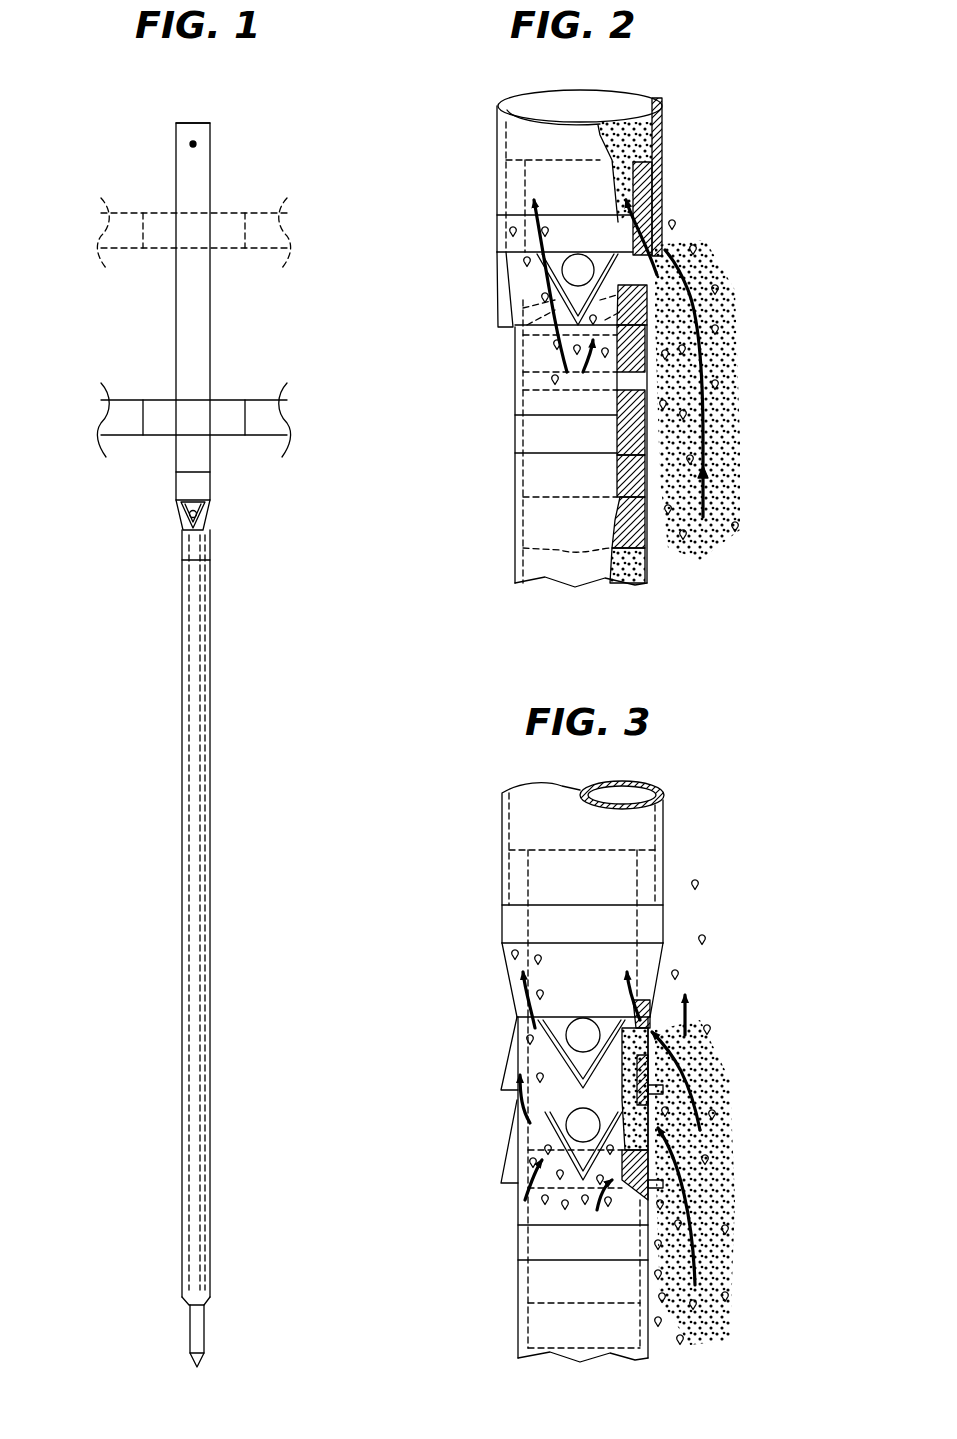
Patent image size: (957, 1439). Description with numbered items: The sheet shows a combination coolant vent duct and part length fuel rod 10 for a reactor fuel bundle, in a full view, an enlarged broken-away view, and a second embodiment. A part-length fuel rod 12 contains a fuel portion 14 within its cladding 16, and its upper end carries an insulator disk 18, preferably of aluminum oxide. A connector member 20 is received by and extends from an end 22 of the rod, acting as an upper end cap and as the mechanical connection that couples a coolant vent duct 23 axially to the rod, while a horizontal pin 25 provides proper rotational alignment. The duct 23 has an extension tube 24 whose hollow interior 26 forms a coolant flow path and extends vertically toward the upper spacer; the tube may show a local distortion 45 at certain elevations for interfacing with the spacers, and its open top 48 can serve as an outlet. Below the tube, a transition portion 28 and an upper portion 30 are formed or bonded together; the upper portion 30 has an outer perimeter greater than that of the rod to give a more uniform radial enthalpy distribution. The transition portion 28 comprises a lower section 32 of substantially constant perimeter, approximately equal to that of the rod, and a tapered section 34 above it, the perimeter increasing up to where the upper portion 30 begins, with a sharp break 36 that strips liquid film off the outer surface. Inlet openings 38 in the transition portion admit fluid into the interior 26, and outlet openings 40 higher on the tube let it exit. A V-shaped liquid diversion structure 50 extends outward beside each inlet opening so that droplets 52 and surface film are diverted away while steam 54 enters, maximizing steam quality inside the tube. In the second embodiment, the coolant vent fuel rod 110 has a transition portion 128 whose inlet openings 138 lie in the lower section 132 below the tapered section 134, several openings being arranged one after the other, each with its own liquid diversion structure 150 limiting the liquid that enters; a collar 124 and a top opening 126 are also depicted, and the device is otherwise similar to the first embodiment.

In FIG. 1, the combination coolant vent duct and part length fuel rod 10 is at (218, 683).
In FIG. 1, the part-length fuel rod 12 is at (210, 1087).
In FIG. 2, the part-length fuel rod 12 is at (652, 571).
In FIG. 3, the part-length fuel rod 12 is at (583, 1189).
In FIG. 2, the fuel portion 14 is at (628, 583).
In FIG. 2, the cladding 16 is at (617, 485).
In FIG. 2, the insulator disk 18 is at (617, 518).
In FIG. 2, the connector member 20 is at (617, 430).
In FIG. 1, the end of the part-length fuel rod 22 is at (228, 214).
In FIG. 2, the end of the part-length fuel rod 22 is at (515, 470).
In FIG. 2, the coolant vent duct 23 is at (664, 185).
In FIG. 1, the extension tube 24 is at (210, 335).
In FIG. 2, the extension tube 24 is at (662, 150).
In FIG. 1, the horizontal pin 25 is at (128, 400).
In FIG. 2, the horizontal pin 25 is at (523, 390).
In FIG. 2, the hollow interior 26 is at (570, 100).
In FIG. 2, the transition portion 28 is at (512, 331).
In FIG. 2, the upper portion 30 is at (495, 238).
In FIG. 2, the lower section 32 is at (515, 345).
In FIG. 2, the tapered section 34 is at (650, 300).
In FIG. 2, the sharp break 36 is at (497, 253).
In FIG. 1, the inlet openings 38 is at (205, 506).
In FIG. 2, the inlet openings 38 is at (572, 268).
In FIG. 1, the outlet openings 40 is at (193, 144).
In FIG. 2, the local distortion 45 is at (497, 143).
In FIG. 1, the top of extension tube 48 is at (196, 123).
In FIG. 2, the liquid diversion structure 50 is at (680, 278).
In FIG. 2, the droplets 52 is at (685, 415).
In FIG. 2, the steam 54 is at (620, 210).
In FIG. 3, the coolant vent fuel rod 110 is at (665, 875).
In FIG. 3, the collar 124 is at (665, 910).
In FIG. 3, the opening 126 is at (628, 790).
In FIG. 3, the transition portion 128 is at (502, 1010).
In FIG. 3, the lower section 132 is at (655, 1085).
In FIG. 3, the tapered section 134 is at (663, 965).
In FIG. 3, the inlet openings 138 is at (583, 1030).
In FIG. 3, the liquid diversion structure 150 is at (555, 1062).